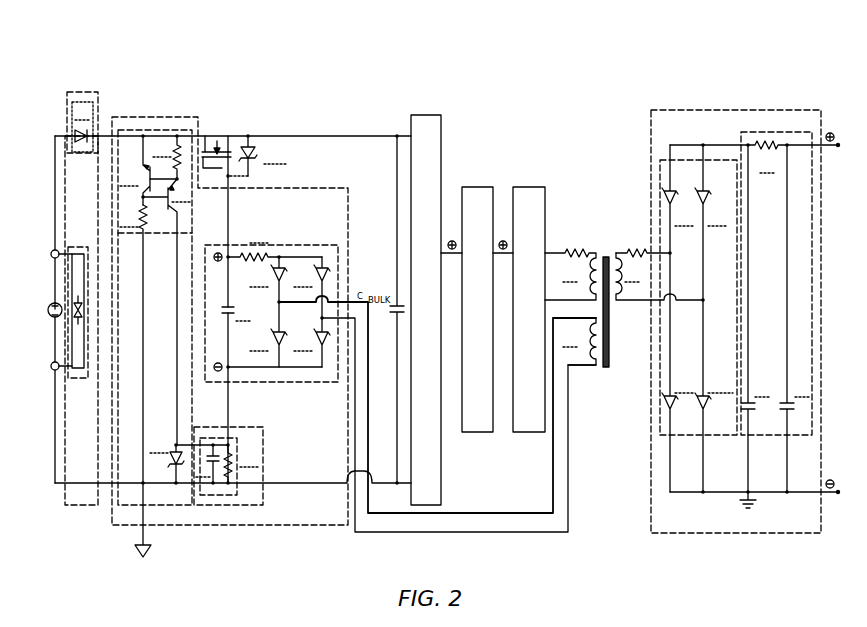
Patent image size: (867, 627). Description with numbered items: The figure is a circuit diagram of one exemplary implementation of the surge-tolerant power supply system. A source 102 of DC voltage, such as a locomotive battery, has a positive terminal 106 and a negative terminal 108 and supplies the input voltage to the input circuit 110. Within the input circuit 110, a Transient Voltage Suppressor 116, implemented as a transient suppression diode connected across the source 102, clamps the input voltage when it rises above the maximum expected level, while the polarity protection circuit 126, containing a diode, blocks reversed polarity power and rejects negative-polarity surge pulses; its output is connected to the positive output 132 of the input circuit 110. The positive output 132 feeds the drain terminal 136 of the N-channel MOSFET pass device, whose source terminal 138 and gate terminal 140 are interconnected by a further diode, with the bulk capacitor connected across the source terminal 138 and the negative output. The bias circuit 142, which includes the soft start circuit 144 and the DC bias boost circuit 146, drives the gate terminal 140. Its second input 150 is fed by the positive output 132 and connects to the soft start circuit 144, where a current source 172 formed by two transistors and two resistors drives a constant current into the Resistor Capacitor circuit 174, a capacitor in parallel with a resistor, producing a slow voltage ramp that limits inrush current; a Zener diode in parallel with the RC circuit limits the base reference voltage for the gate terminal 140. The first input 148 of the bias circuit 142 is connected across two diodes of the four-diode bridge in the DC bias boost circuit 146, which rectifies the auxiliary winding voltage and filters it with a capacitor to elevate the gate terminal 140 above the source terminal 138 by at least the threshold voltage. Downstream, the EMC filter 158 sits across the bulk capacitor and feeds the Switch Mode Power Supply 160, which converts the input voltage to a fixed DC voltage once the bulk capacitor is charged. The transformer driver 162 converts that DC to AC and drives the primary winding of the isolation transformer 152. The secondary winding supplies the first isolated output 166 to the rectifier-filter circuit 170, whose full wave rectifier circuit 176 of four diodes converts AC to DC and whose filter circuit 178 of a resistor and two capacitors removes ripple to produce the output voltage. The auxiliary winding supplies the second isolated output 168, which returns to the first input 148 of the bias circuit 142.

The source 102 is at (50, 280).
The positive terminal 106 is at (53, 302).
The negative terminal 108 is at (53, 320).
The input circuit 110 is at (63, 181).
The Transient Voltage Suppressor 116 is at (84, 378).
The polarity protection circuit 126 is at (75, 92).
The positive output 132 is at (100, 135).
The drain terminal 136 is at (204, 134).
The source terminal 138 is at (233, 134).
The gate terminal 140 is at (225, 165).
The bias circuit 142 is at (290, 527).
The soft start circuit 144 is at (236, 506).
The DC bias boost circuit 146 is at (305, 245).
The first input 148 is at (375, 516).
The second input 150 is at (230, 402).
The isolation transformer 152 is at (605, 246).
The EMC filter 158 is at (426, 310).
The Switch Mode Power Supply 160 is at (477, 309).
The transformer driver 162 is at (529, 309).
The first isolated output 166 is at (647, 250).
The second isolated output 168 is at (584, 368).
The rectifier-filter circuit 170 is at (728, 110).
The current source 172 is at (163, 130).
The Resistor Capacitor circuit 174 is at (198, 497).
The full wave rectifier circuit 176 is at (680, 158).
The filter circuit 178 is at (790, 132).